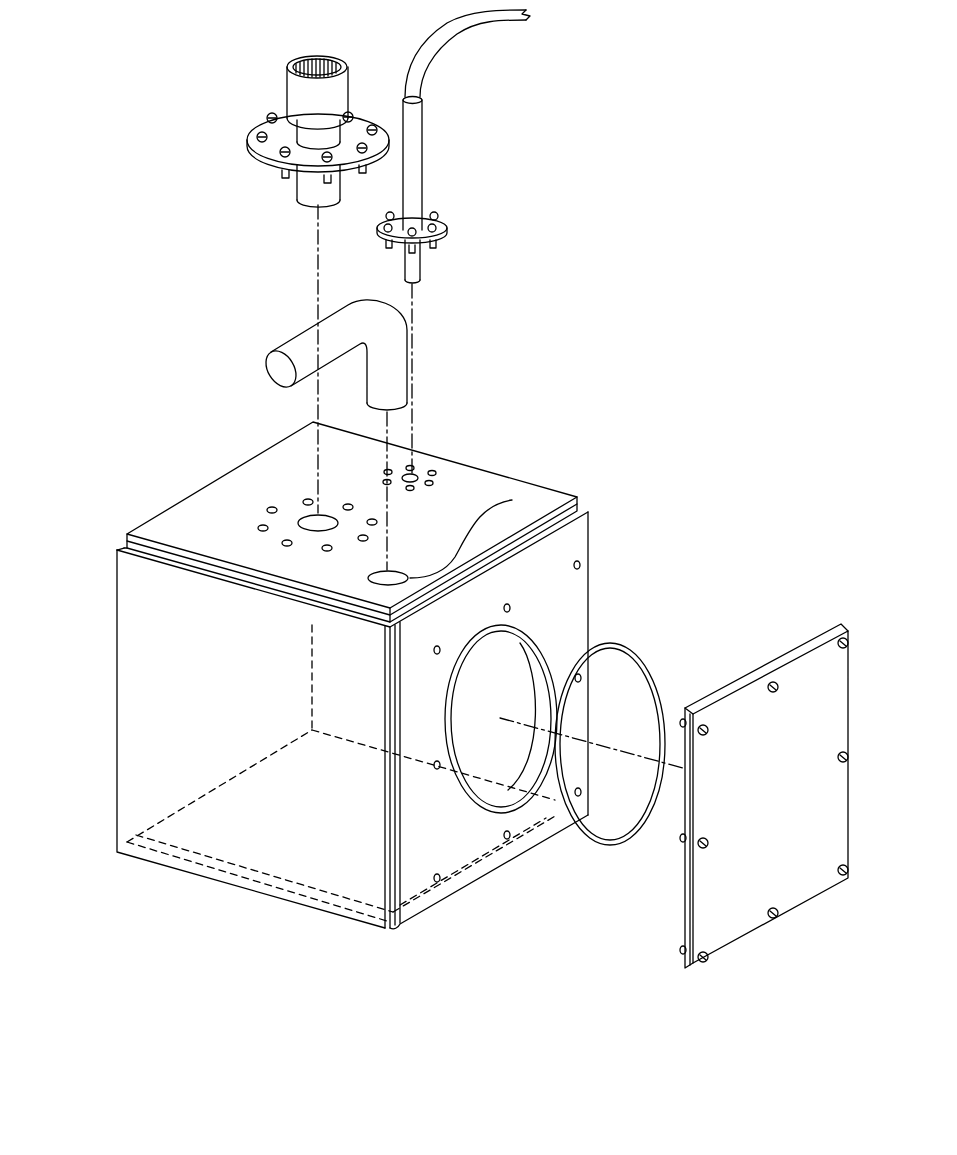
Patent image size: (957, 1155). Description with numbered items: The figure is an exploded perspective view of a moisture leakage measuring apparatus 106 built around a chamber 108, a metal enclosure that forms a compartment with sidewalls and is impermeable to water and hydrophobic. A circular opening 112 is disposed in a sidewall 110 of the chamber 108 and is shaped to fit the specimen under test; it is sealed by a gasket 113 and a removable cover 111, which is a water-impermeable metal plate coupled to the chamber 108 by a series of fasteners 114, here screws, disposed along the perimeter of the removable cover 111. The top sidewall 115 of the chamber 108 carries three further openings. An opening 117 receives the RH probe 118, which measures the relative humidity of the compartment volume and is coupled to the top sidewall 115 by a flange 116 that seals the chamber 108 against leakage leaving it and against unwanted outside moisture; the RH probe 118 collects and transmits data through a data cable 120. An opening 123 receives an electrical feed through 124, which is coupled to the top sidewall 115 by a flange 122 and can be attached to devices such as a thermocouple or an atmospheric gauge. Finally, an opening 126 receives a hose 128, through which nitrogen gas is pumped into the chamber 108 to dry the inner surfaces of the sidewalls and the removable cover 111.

The moisture leakage measuring apparatus 106 is at (640, 325).
The chamber 108 is at (125, 606).
The sidewall 110 is at (590, 543).
The removable cover 111 is at (731, 934).
The opening 112 is at (520, 667).
The gasket 113 is at (625, 656).
The fasteners 114 is at (848, 633).
The top sidewall 115 is at (166, 530).
The flange 116 is at (440, 222).
The opening 117 is at (418, 468).
The RH probe 118 is at (423, 138).
The data cable 120 is at (423, 66).
The flange 122 is at (262, 120).
The opening 123 is at (300, 516).
The electrical feed through 124 is at (305, 57).
The opening 126 is at (512, 500).
The hose 128 is at (295, 338).